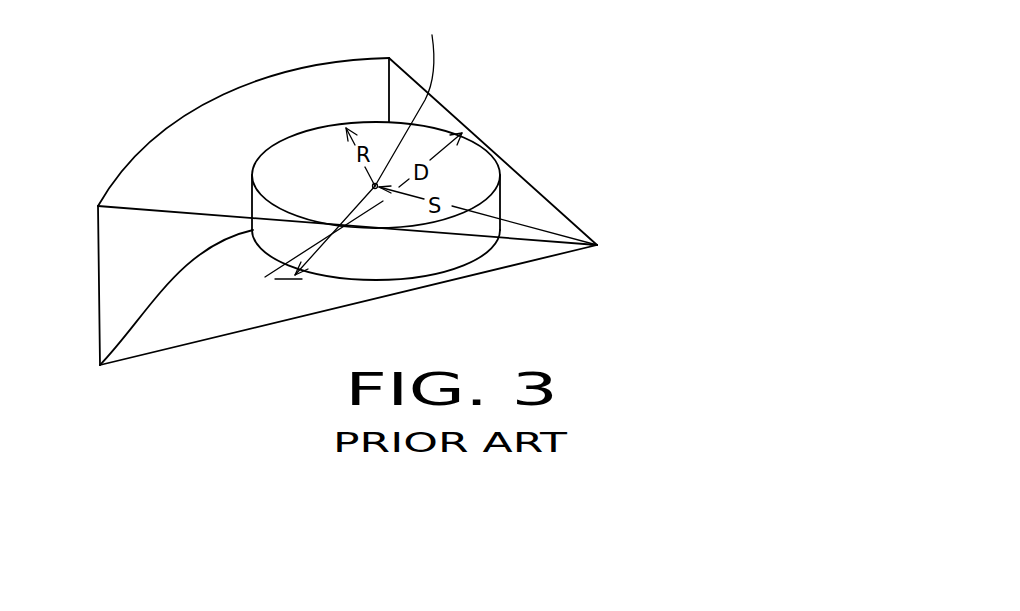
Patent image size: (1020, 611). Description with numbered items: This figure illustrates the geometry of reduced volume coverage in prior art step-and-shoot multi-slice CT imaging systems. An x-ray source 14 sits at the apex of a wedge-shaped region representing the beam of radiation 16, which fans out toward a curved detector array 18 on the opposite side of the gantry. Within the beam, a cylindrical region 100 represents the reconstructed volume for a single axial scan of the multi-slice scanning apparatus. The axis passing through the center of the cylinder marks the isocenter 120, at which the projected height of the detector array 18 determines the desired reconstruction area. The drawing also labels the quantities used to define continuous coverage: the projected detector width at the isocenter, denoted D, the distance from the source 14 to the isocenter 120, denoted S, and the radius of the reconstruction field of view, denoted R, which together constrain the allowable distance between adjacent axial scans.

The x-ray source 14 is at (681, 240).
The beam of radiation 16 is at (213, 308).
The detector array 18 is at (171, 124).
The cylindrical region 100 is at (463, 158).
The isocenter 120 is at (356, 142).